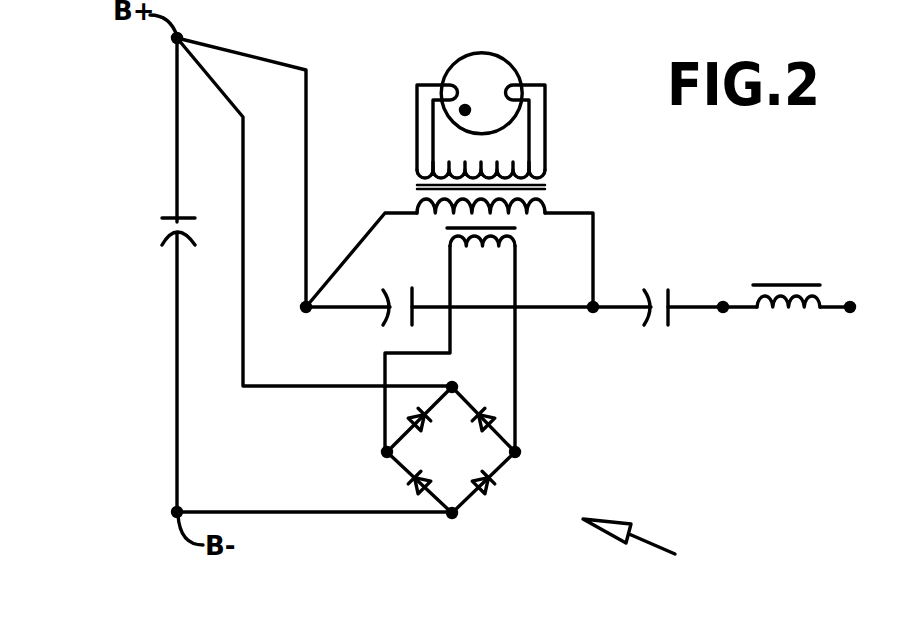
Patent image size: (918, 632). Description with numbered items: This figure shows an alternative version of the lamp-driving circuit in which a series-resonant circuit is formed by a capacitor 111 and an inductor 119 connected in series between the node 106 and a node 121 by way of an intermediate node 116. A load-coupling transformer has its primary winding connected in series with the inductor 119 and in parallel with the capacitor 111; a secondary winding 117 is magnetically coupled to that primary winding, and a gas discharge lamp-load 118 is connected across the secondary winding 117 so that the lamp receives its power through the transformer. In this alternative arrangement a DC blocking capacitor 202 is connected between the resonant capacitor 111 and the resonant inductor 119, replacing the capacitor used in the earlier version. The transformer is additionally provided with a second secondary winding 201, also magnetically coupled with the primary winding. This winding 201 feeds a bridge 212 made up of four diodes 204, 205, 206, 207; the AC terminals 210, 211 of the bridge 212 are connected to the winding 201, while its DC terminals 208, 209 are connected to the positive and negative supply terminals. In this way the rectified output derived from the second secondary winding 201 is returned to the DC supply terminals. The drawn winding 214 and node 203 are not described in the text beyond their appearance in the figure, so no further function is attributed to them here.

The node 106 is at (306, 311).
The capacitor 111 is at (385, 325).
The node 116 is at (593, 311).
The secondary winding 117 is at (515, 165).
The gas discharge lamp-load 118 is at (491, 53).
The inductor 119 is at (820, 285).
The node 121 is at (850, 311).
The second secondary winding 201 is at (515, 242).
The DC blocking capacitor 202 is at (650, 325).
The circuit node 203 is at (723, 304).
The diode 204 is at (498, 413).
The diode 205 is at (495, 497).
The diode 206 is at (434, 418).
The diode 207 is at (407, 478).
The DC terminal 208 is at (170, 214).
The DC terminal 209 is at (452, 516).
The AC terminal 210 is at (515, 455).
The AC terminal 211 is at (383, 452).
The bridge 212 is at (629, 552).
The transformer winding 214 is at (545, 190).